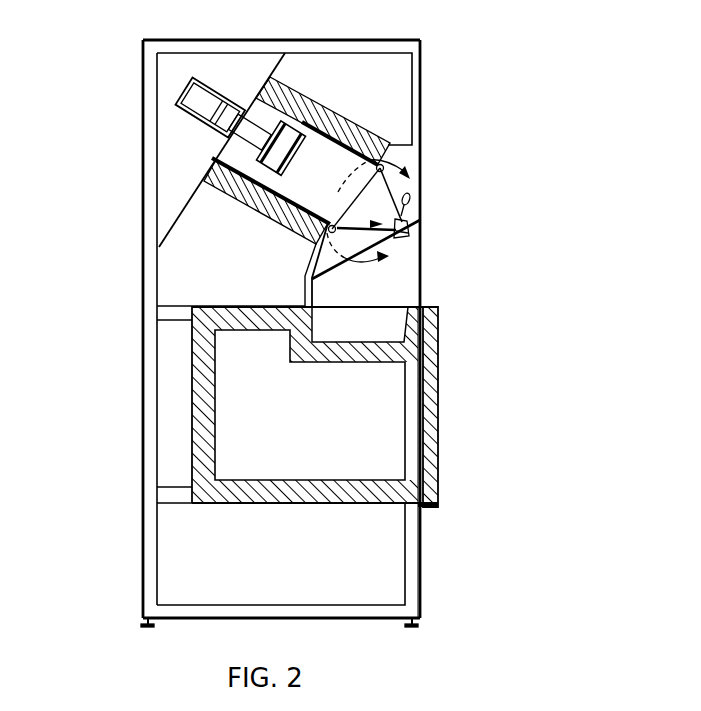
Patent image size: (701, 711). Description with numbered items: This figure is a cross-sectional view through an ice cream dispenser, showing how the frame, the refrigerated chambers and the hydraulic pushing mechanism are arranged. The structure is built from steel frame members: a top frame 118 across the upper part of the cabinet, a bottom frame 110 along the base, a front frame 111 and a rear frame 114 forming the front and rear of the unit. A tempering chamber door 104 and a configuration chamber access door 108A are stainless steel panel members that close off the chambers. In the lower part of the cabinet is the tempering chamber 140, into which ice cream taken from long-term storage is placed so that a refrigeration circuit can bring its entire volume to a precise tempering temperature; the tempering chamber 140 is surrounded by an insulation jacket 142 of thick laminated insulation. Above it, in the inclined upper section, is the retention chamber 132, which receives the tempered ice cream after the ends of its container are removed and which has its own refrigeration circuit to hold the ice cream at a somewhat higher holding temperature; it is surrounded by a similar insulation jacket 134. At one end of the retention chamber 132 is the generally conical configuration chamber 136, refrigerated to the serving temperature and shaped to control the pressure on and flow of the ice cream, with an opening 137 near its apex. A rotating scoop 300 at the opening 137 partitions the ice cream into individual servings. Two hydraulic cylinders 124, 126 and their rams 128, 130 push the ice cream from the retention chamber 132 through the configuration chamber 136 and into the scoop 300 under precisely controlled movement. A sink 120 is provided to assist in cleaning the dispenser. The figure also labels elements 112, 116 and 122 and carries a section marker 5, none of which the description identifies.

The tempering chamber door 104 is at (435, 404).
The configuration chamber access door 108A is at (425, 98).
The bottom frame 110 is at (272, 610).
The front frame 111 is at (415, 562).
The feet 112 is at (147, 628).
The rear frame 114 is at (145, 390).
The inclined partition wall 116 is at (266, 74).
The top frame 118 is at (330, 47).
The sink 120 is at (378, 301).
The pneumatic cylinder 122 is at (172, 112).
The hydraulic cylinder 124 is at (217, 116).
The hydraulic cylinder 126 is at (252, 112).
The ram 128 is at (350, 136).
The ram 130 is at (295, 163).
The retention chamber 132 is at (374, 164).
The insulation jacket 134 is at (328, 104).
The configuration chamber 136 is at (368, 210).
The opening 137 is at (310, 242).
The tempering chamber 140 is at (352, 428).
The insulation jacket 142 is at (333, 356).
The rotating scoop 300 is at (402, 233).
The section line indicator for FIG. 5 is at (384, 219).